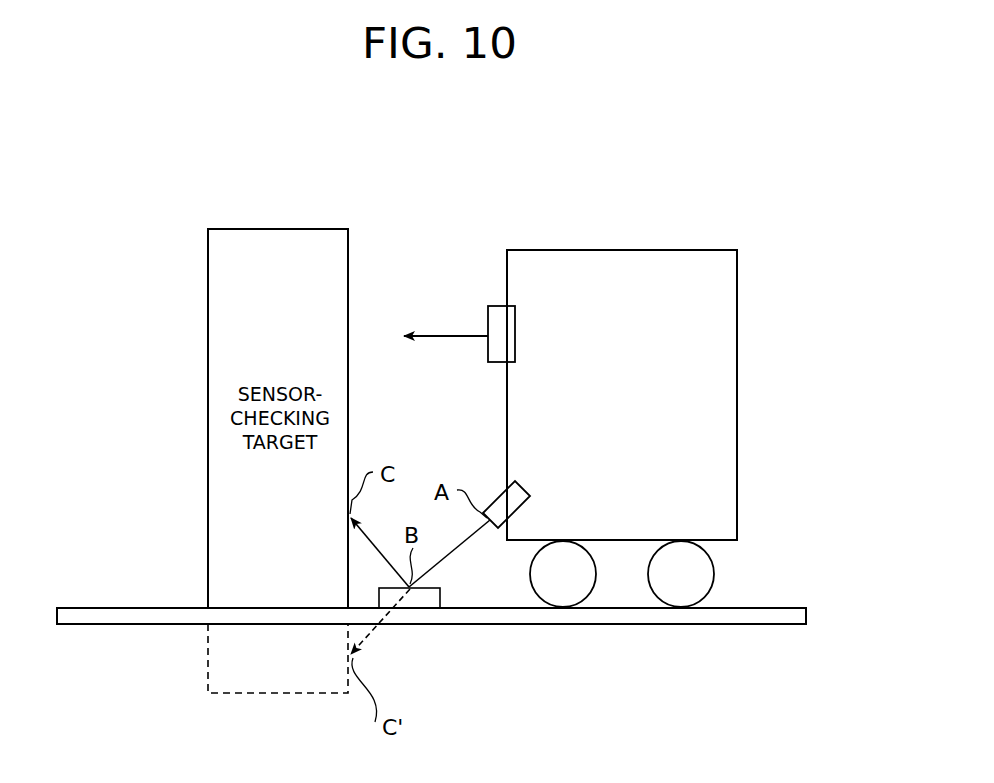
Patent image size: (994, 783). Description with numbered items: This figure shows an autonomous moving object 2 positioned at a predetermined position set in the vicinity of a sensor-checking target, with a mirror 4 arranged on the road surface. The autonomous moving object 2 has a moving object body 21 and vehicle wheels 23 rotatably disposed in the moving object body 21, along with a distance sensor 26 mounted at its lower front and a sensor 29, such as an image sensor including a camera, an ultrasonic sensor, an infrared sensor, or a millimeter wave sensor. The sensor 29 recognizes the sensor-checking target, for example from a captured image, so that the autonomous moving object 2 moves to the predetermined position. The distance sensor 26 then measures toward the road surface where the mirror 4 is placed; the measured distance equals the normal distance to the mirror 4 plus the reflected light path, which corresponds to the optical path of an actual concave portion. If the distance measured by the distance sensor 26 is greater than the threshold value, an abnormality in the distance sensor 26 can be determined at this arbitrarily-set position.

The autonomous moving object 2 is at (645, 248).
The moving object body 21 is at (727, 352).
The sensor 29 is at (497, 312).
The distance sensor 26 is at (502, 500).
The vehicle wheels 23 is at (563, 598).
The mirror 4 is at (413, 598).